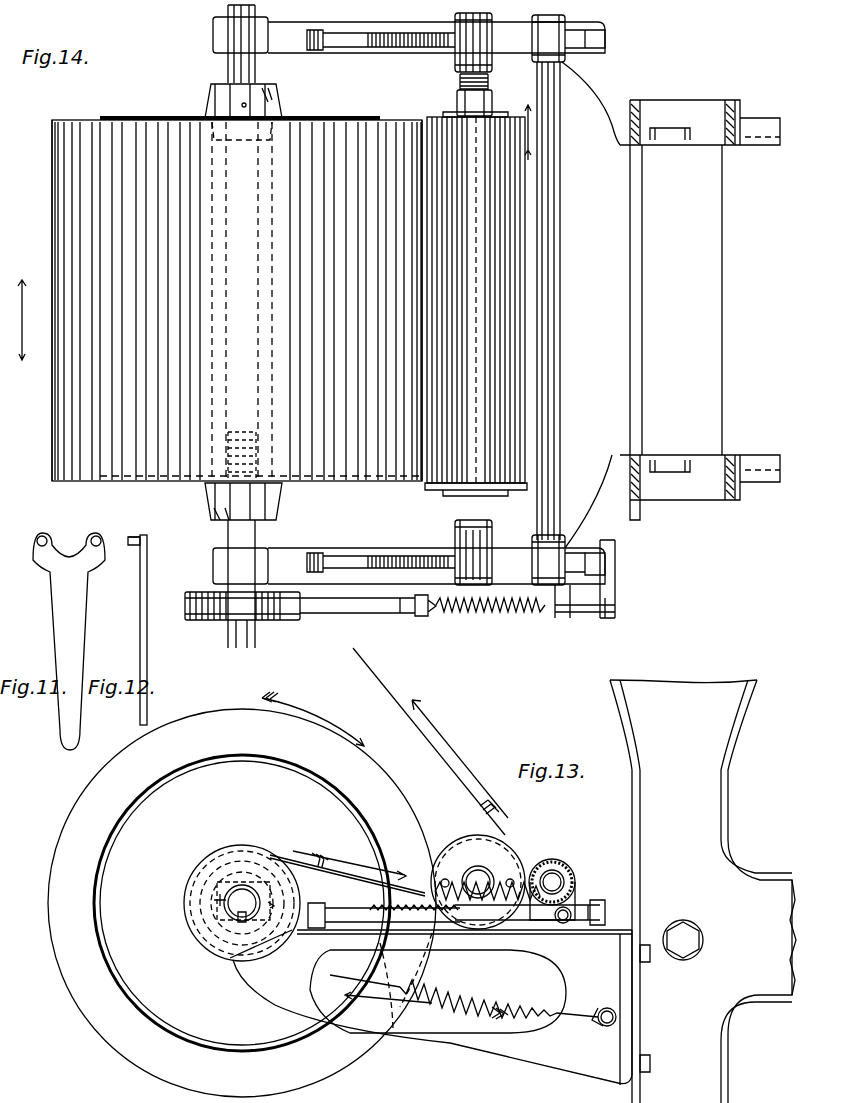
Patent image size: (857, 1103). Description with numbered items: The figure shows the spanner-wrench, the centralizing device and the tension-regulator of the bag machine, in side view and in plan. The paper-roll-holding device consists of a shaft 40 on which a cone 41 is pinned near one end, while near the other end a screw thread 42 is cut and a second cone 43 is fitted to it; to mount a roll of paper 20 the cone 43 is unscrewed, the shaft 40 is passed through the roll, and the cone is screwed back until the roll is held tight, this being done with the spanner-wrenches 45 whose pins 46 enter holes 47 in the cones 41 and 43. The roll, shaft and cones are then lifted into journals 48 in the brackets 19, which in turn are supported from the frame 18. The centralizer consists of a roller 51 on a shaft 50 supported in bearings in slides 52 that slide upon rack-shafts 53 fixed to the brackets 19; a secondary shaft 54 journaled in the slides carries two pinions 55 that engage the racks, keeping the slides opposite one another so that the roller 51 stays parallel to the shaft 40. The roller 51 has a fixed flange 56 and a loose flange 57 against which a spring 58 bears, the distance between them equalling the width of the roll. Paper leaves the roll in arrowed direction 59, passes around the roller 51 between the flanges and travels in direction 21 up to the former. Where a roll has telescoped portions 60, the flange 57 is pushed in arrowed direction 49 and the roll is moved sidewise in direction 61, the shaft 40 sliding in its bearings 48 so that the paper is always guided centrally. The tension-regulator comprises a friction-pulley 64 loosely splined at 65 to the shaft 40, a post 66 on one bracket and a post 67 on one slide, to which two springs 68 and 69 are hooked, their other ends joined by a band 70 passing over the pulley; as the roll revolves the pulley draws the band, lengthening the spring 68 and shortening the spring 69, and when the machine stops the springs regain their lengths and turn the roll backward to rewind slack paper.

In FIG. 14, the frame member 18 is at (700, 300).
In FIG. 13, the frame member 18 is at (692, 886).
In FIG. 14, the bracket 19 is at (454, 303).
In FIG. 13, the bracket 19 is at (312, 996).
In FIG. 14, the roll of paper 20 is at (237, 299).
In FIG. 13, the roll of paper 20 is at (242, 903).
In FIG. 13, the direction to the former 21 is at (430, 741).
In FIG. 14, the shaft 40 is at (228, 12).
In FIG. 13, the shaft 40 is at (242, 903).
In FIG. 14, the cone 41 is at (205, 95).
In FIG. 14, the screw thread 42 is at (256, 446).
In FIG. 14, the second cone 43 is at (282, 497).
In FIG. 11, the spanner-wrench 45 is at (69, 641).
In FIG. 12, the spanner-wrench 45 is at (132, 630).
In FIG. 11, the pins 46 is at (44, 537).
In FIG. 12, the pins 46 is at (122, 540).
In FIG. 14, the holes 47 is at (268, 90).
In FIG. 13, the holes 47 is at (218, 900).
In FIG. 14, the journals 48 is at (213, 36).
In FIG. 14, the arrowed direction 49 is at (513, 126).
In FIG. 14, the shaft 50 is at (453, 8).
In FIG. 13, the shaft 50 is at (478, 882).
In FIG. 14, the roller 51 is at (490, 355).
In FIG. 13, the roller 51 is at (462, 850).
In FIG. 14, the slides 52 is at (455, 58).
In FIG. 13, the slides 52 is at (530, 909).
In FIG. 14, the rack-shafts 53 is at (390, 48).
In FIG. 13, the rack-shafts 53 is at (358, 910).
In FIG. 14, the secondary shaft 54 is at (548, 432).
In FIG. 13, the secondary shaft 54 is at (552, 882).
In FIG. 14, the pinions 55 is at (562, 66).
In FIG. 13, the pinions 55 is at (570, 872).
In FIG. 14, the fixed flange 56 is at (432, 488).
In FIG. 14, the loose flange 57 is at (445, 116).
In FIG. 14, the spring 58 is at (489, 80).
In FIG. 13, the arrowed direction 59 is at (313, 719).
In FIG. 14, the telescoped portion 60 is at (114, 118).
In FIG. 14, the direction of sidewise movement 61 is at (19, 308).
In FIG. 14, the friction-pulley 64 is at (212, 620).
In FIG. 13, the friction-pulley 64 is at (242, 903).
In FIG. 14, the spline 65 is at (242, 648).
In FIG. 13, the spline 65 is at (240, 920).
In FIG. 14, the post 66 is at (611, 579).
In FIG. 13, the post 66 is at (605, 1026).
In FIG. 14, the post 67 is at (580, 610).
In FIG. 13, the post 67 is at (566, 924).
In FIG. 14, the spring 68 is at (425, 618).
In FIG. 13, the spring 68 is at (454, 991).
In FIG. 14, the spring 69 is at (490, 618).
In FIG. 13, the spring 69 is at (520, 925).
In FIG. 14, the band 70 is at (357, 608).
In FIG. 13, the band 70 is at (347, 873).